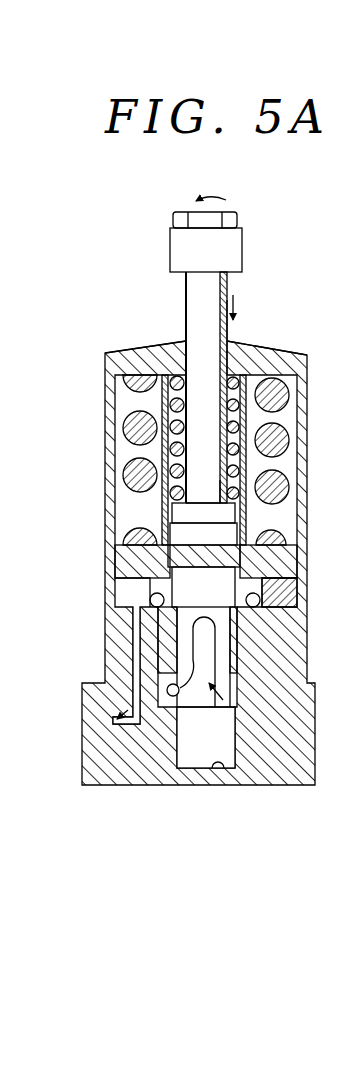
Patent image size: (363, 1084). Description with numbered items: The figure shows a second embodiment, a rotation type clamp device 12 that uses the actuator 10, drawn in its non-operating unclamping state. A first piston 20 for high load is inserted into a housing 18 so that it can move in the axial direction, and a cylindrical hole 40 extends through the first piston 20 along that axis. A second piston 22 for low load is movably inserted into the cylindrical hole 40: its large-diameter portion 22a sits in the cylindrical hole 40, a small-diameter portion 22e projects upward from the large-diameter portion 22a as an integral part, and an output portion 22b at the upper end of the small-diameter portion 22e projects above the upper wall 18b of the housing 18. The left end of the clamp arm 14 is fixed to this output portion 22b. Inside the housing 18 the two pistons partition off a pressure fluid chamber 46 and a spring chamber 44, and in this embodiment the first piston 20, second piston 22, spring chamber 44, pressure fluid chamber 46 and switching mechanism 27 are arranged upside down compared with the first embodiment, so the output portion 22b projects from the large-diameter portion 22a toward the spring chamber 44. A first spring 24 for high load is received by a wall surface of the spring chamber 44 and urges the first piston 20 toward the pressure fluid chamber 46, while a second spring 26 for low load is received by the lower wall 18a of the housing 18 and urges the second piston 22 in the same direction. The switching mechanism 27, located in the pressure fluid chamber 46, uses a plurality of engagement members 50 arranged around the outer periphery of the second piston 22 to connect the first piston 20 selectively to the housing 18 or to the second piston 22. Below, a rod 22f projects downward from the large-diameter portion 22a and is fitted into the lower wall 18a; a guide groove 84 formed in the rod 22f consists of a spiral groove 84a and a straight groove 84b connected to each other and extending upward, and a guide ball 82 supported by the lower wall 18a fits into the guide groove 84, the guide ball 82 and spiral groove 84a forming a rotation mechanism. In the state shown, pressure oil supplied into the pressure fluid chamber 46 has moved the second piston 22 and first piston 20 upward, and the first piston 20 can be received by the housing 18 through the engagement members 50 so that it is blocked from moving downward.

The actuator 10 is at (107, 295).
The rotation type clamp device 12 is at (278, 236).
The clamp arm 14 is at (170, 252).
The housing 18 is at (80, 725).
The lower wall 18a is at (220, 765).
The upper wall 18b is at (270, 362).
The first piston 20 is at (113, 553).
The second piston 22 is at (250, 517).
The large-diameter portion 22a is at (118, 527).
The output portion 22b is at (186, 300).
The small-diameter portion 22e is at (190, 320).
The rod 22f is at (136, 643).
The first spring 24 is at (137, 482).
The second spring 26 is at (168, 404).
The switching mechanism 27 is at (138, 590).
The cylindrical hole 40 is at (280, 541).
The spring chamber 44 is at (128, 450).
The pressure fluid chamber 46 is at (276, 592).
The engagement members 50 is at (262, 601).
The guide ball 82 is at (172, 697).
The guide groove 84 is at (272, 745).
The spiral groove 84a is at (207, 700).
The straight groove 84b is at (240, 646).